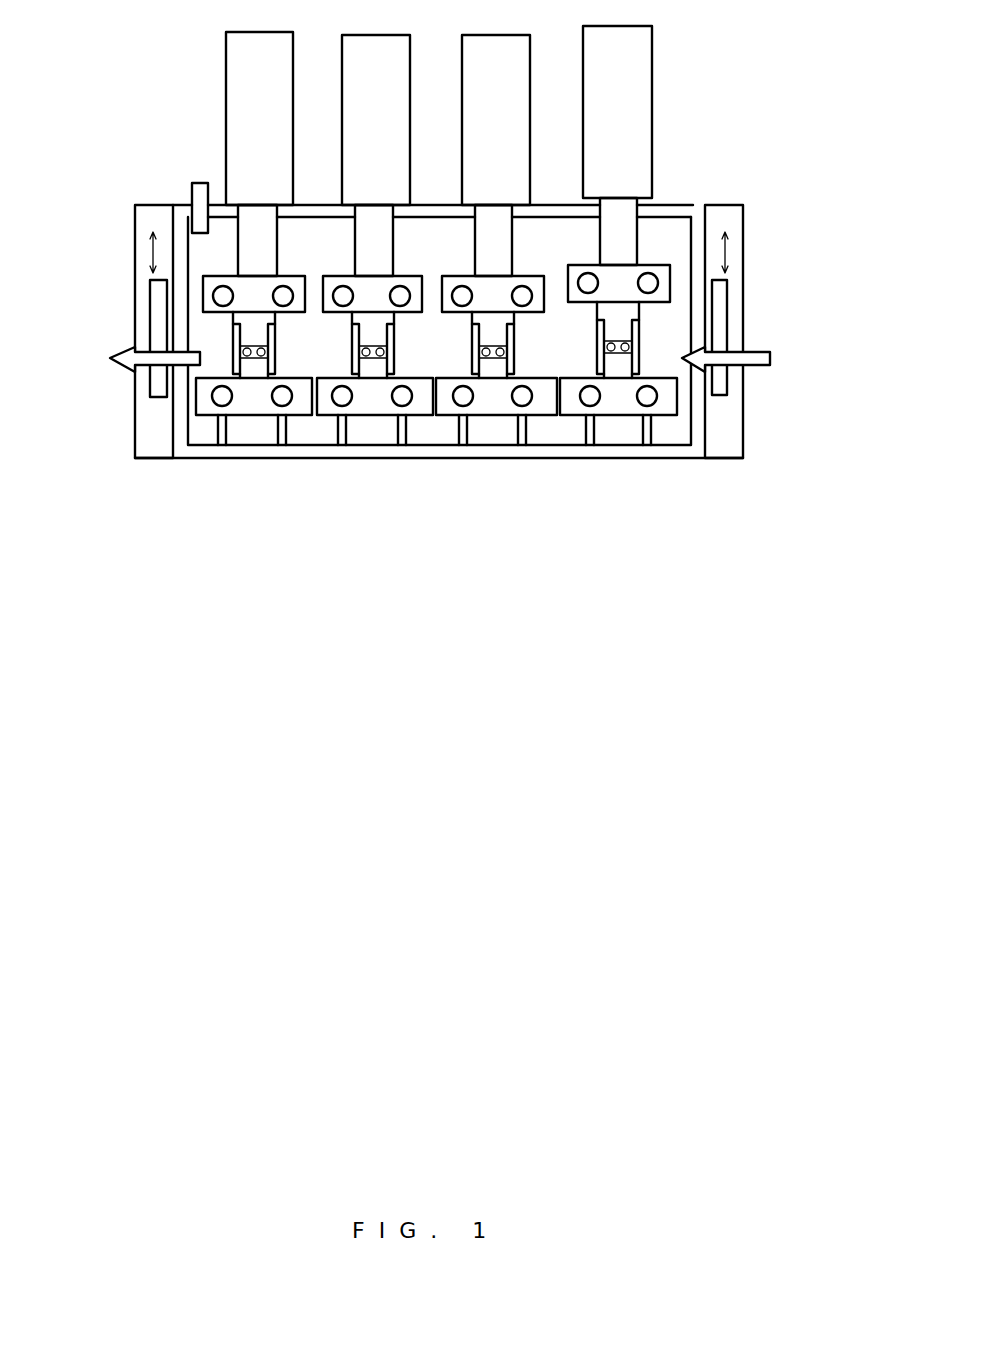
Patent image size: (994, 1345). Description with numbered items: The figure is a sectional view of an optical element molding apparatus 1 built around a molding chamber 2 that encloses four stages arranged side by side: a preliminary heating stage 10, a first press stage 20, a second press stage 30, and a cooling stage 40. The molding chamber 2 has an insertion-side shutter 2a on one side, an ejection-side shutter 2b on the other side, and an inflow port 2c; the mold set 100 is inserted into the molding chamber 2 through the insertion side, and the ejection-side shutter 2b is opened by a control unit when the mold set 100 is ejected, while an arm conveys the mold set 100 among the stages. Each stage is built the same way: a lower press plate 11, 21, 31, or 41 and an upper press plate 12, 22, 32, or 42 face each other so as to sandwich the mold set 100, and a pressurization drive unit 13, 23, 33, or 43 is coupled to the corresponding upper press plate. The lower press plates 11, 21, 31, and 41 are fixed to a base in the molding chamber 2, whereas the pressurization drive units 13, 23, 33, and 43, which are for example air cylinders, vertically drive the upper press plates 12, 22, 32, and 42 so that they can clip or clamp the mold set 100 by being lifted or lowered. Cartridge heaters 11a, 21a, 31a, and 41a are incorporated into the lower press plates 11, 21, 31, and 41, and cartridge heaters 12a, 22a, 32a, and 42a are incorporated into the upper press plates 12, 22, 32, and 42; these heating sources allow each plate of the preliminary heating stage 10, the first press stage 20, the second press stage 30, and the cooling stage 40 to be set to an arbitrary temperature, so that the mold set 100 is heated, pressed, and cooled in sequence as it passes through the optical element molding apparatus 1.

The optical element molding apparatus 1 is at (439, 276).
The molding chamber 2 is at (441, 289).
The insertion-side shutter 2a is at (767, 337).
The ejection-side shutter 2b is at (113, 338).
The inflow port 2c is at (190, 176).
The preliminary heating stage 10 is at (691, 276).
The lower press plate 11 is at (647, 452).
The cartridge heater 11a is at (685, 447).
The upper press plate 12 is at (695, 252).
The cartridge heater 12a is at (674, 235).
The pressurization drive unit 13 is at (645, 145).
The first press stage 20 is at (510, 286).
The lower press plate 21 is at (507, 459).
The cartridge heater 21a is at (545, 463).
The upper press plate 22 is at (513, 250).
The cartridge heater 22a is at (548, 239).
The pressurization drive unit 23 is at (516, 154).
The second press stage 30 is at (390, 290).
The lower press plate 31 is at (380, 463).
The cartridge heater 31a is at (417, 467).
The upper press plate 32 is at (393, 250).
The cartridge heater 32a is at (427, 239).
The pressurization drive unit 33 is at (396, 154).
The cooling stage 40 is at (270, 290).
The lower press plate 41 is at (256, 463).
The cartridge heater 41a is at (294, 467).
The upper press plate 42 is at (273, 250).
The cartridge heater 42a is at (308, 239).
The pressurization drive unit 43 is at (281, 154).
The mold set 100 is at (713, 342).